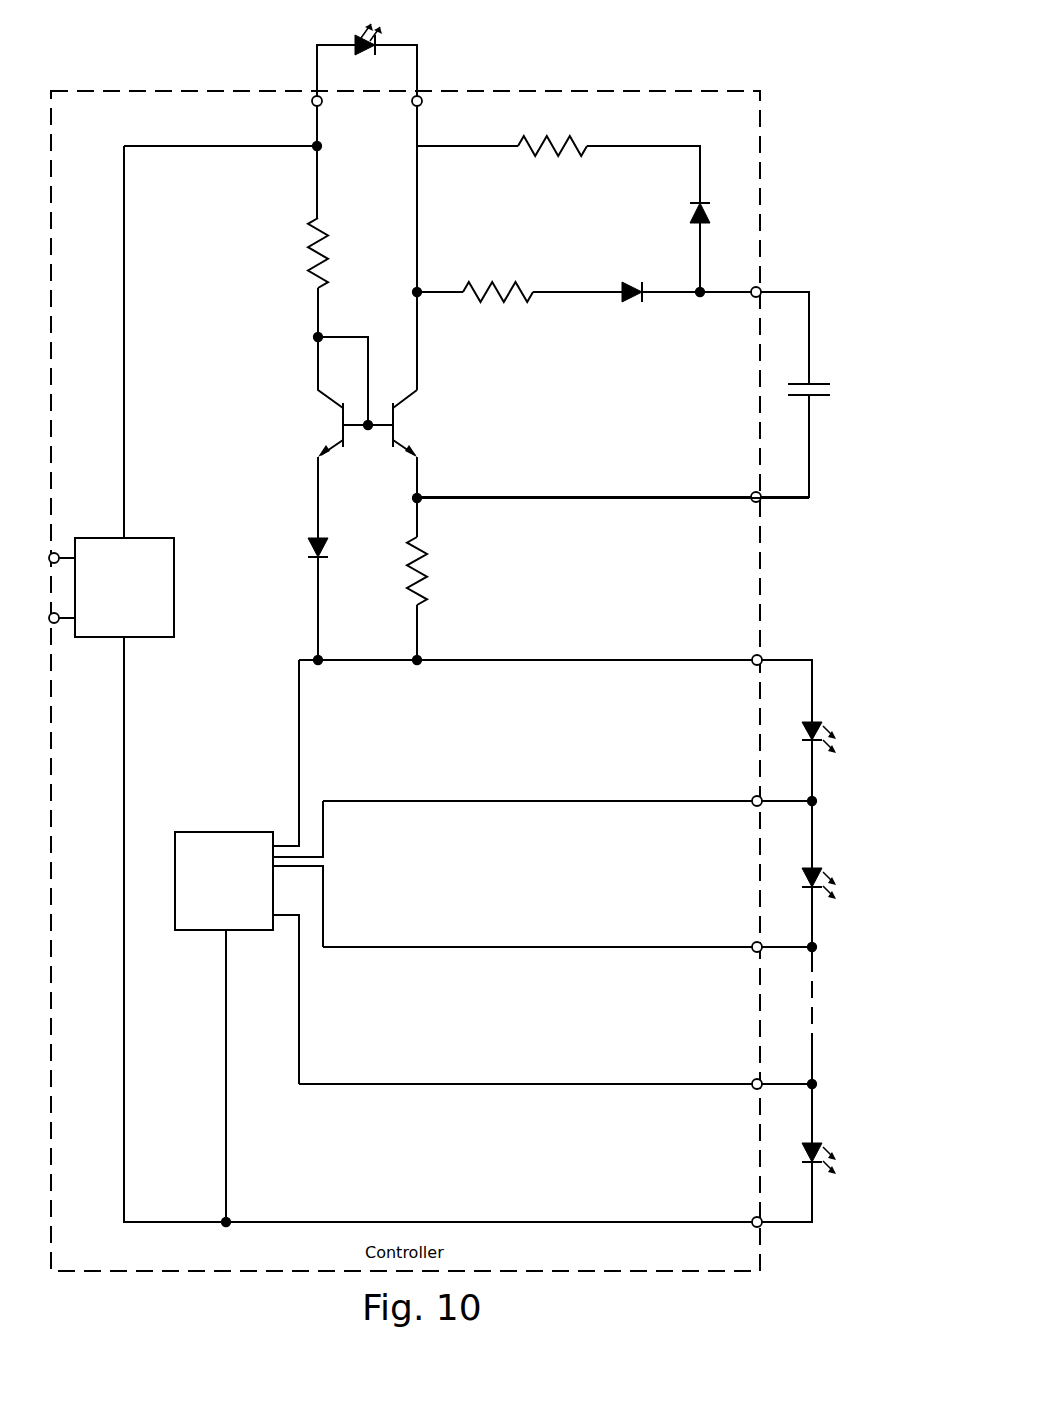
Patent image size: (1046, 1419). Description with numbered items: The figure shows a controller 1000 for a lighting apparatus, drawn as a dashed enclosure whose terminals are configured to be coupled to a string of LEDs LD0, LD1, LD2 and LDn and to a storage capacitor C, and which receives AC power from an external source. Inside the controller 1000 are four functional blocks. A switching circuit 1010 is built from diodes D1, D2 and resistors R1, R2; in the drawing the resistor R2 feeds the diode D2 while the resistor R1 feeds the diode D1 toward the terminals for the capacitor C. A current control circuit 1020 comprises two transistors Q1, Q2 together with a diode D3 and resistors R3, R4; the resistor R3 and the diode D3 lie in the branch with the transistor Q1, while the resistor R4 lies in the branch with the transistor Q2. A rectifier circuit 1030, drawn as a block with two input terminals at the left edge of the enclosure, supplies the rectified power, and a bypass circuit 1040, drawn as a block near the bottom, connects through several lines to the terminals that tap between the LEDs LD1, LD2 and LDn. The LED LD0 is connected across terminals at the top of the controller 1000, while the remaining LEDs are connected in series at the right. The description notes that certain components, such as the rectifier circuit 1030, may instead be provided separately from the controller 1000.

The controller 1000 is at (515, 91).
The switching circuit 1010 is at (650, 130).
The current control circuit 1020 is at (548, 580).
The rectifier circuit 1030 is at (155, 538).
The bypass circuit 1040 is at (223, 832).
The LED LD0 is at (364, 52).
The LED LD1 is at (848, 737).
The LED LD2 is at (848, 879).
The LED LDn is at (846, 1158).
The resistor R1 is at (498, 277).
The resistor R2 is at (552, 162).
The resistor R3 is at (300, 253).
The resistor R4 is at (438, 571).
The diode D1 is at (632, 277).
The diode D2 is at (680, 214).
The diode D3 is at (289, 548).
The transistor Q1 is at (332, 397).
The transistor Q2 is at (384, 397).
The storage capacitor C is at (822, 388).